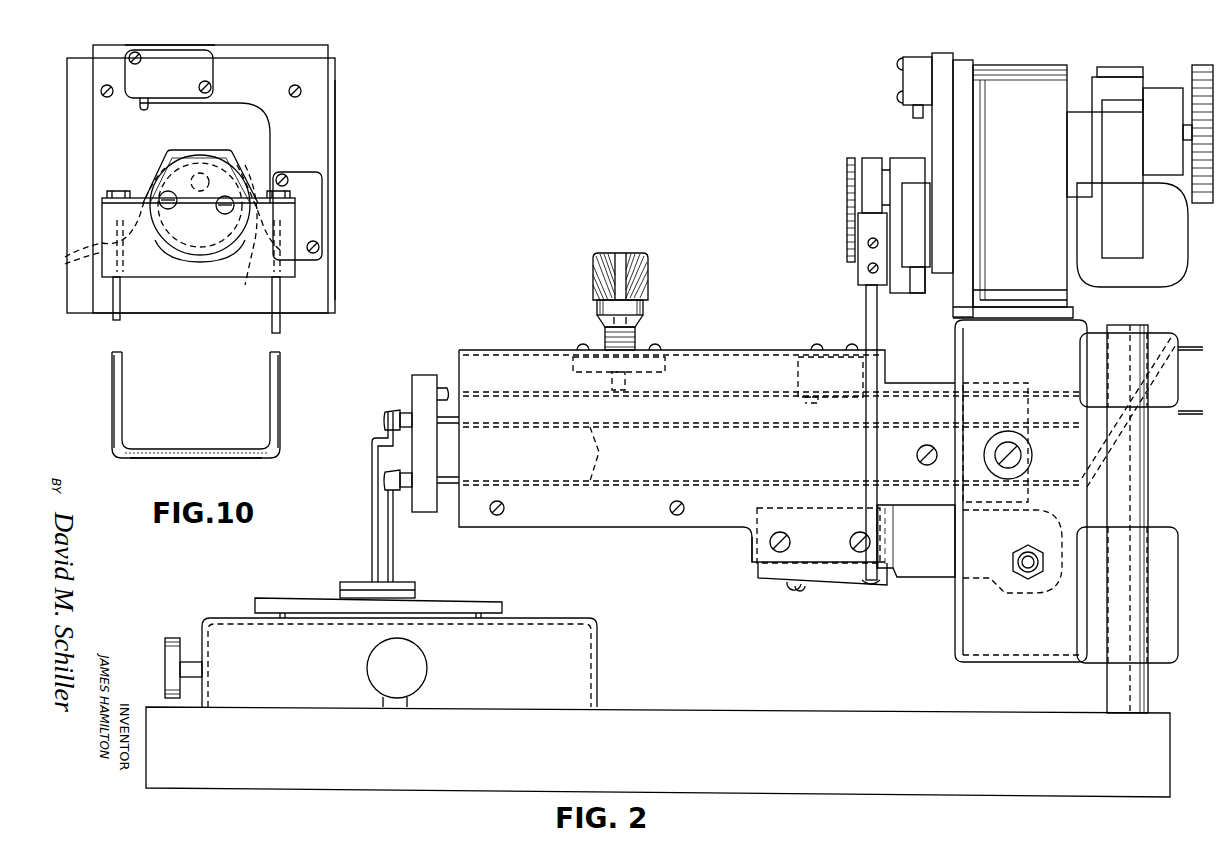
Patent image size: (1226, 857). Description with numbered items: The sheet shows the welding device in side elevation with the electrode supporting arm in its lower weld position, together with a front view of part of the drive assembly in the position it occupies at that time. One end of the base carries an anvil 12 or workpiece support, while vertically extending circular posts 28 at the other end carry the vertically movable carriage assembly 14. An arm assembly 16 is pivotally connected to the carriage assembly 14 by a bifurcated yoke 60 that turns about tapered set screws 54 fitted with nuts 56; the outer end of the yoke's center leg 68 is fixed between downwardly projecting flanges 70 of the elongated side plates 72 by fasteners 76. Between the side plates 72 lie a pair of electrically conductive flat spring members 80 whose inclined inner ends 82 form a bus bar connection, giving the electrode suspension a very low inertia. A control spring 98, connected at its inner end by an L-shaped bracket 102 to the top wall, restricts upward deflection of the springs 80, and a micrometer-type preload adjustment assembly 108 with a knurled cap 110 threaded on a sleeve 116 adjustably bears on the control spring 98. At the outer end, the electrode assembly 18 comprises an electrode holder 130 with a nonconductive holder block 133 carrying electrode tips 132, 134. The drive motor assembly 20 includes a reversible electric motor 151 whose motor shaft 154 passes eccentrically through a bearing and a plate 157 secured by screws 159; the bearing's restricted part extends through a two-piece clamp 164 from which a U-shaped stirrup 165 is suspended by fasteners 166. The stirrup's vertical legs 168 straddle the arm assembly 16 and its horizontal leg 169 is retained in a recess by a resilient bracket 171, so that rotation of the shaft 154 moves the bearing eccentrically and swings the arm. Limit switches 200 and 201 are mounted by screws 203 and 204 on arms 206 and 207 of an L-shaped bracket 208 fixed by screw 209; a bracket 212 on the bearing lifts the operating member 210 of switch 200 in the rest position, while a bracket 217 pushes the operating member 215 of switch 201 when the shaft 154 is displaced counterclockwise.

In FIG. 2, the anvil 12 is at (486, 600).
In FIG. 2, the carriage assembly 14 is at (950, 606).
In FIG. 2, the arm assembly 16 is at (694, 540).
In FIG. 2, the electrode assembly 18 is at (409, 520).
In FIG. 2, the drive motor assembly 20 is at (838, 227).
In FIG. 2, the posts 28 is at (1106, 680).
In FIG. 2, the set screw 54 is at (1022, 570).
In FIG. 2, the nut 56 is at (1016, 556).
In FIG. 2, the yoke 60 is at (917, 588).
In FIG. 2, the center leg 68 is at (757, 574).
In FIG. 2, the flanges 70 is at (751, 553).
In FIG. 2, the side plates 72 is at (769, 453).
In FIG. 2, the fasteners 76 is at (852, 538).
In FIG. 2, the flat spring members 80 is at (600, 452).
In FIG. 2, the inner end 82 is at (1204, 350).
In FIG. 2, the control spring 98 is at (708, 392).
In FIG. 2, the L-shaped bracket 102 is at (813, 379).
In FIG. 2, the preload adjustment assembly 108 is at (652, 302).
In FIG. 2, the cap 110 is at (650, 275).
In FIG. 2, the sleeve 116 is at (638, 342).
In FIG. 2, the electrode holder 130 is at (433, 365).
In FIG. 2, the electrode tip 132 is at (371, 553).
In FIG. 2, the holder block 133 is at (411, 393).
In FIG. 2, the electrode tip 134 is at (395, 570).
In FIG. 2, the electric motor 151 is at (1093, 186).
In FIG. 10, the motor shaft 154 is at (205, 172).
In FIG. 10, the plate 157 is at (200, 262).
In FIG. 2, the plate 157 is at (846, 174).
In FIG. 10, the screws 159 is at (222, 214).
In FIG. 10, the clamp 164 is at (100, 216).
In FIG. 2, the clamp 164 is at (860, 270).
In FIG. 10, the stirrup 165 is at (104, 428).
In FIG. 10, the fasteners 166 is at (64, 262).
In FIG. 2, the fasteners 166 is at (868, 268).
In FIG. 10, the vertical legs 168 is at (112, 388).
In FIG. 2, the vertical legs 168 is at (865, 455).
In FIG. 10, the horizontal leg 169 is at (200, 459).
In FIG. 2, the horizontal leg 169 is at (866, 590).
In FIG. 2, the resilient bracket 171 is at (848, 586).
In FIG. 10, the up limit switch 200 is at (198, 46).
In FIG. 2, the up limit switch 200 is at (902, 78).
In FIG. 10, the down limit switch 201 is at (323, 212).
In FIG. 2, the down limit switch 201 is at (914, 293).
In FIG. 10, the screws 203 is at (202, 84).
In FIG. 10, the screws 204 is at (289, 178).
In FIG. 10, the arm 206 is at (262, 47).
In FIG. 2, the arm 206 is at (942, 163).
In FIG. 10, the arm 207 is at (329, 141).
In FIG. 10, the L-shaped bracket 208 is at (336, 112).
In FIG. 2, the L-shaped bracket 208 is at (1013, 189).
In FIG. 10, the screw 209 is at (103, 93).
In FIG. 10, the operating member 210 is at (142, 110).
In FIG. 2, the operating member 210 is at (912, 113).
In FIG. 10, the bracket 212 is at (157, 276).
In FIG. 10, the operating member 215 is at (247, 286).
In FIG. 10, the bracket 217 is at (250, 262).